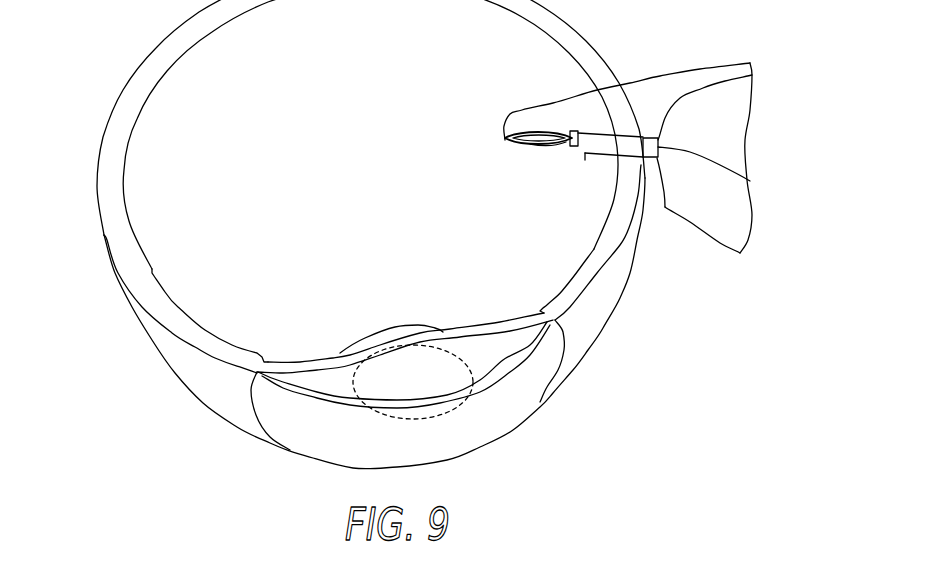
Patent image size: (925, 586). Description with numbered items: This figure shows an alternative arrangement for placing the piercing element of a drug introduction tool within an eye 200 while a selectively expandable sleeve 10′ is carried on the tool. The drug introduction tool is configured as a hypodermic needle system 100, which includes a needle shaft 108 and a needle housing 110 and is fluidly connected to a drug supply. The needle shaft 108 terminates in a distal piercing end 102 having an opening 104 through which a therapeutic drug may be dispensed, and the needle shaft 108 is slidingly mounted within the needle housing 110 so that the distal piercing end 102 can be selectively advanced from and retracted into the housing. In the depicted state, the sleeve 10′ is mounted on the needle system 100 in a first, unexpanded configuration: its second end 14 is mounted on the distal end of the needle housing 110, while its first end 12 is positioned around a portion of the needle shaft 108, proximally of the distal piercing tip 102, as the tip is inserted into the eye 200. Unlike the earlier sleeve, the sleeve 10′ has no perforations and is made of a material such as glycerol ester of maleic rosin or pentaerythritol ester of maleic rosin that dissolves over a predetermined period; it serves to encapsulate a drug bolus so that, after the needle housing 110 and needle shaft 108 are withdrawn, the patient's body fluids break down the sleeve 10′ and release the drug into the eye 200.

The hypodermic needle system 100 is at (651, 78).
The distal piercing end 102 is at (498, 132).
The opening 104 is at (523, 143).
The needle shaft 108 is at (560, 146).
The first end 12 is at (570, 131).
The selectively expandable sleeve 10′ is at (592, 154).
The needle housing 110 is at (648, 158).
The second end 14 is at (752, 181).
The eye 200 is at (614, 351).